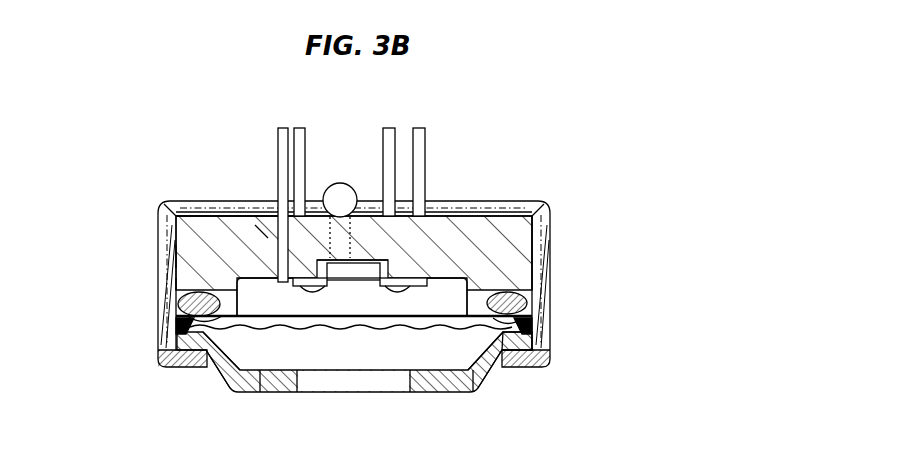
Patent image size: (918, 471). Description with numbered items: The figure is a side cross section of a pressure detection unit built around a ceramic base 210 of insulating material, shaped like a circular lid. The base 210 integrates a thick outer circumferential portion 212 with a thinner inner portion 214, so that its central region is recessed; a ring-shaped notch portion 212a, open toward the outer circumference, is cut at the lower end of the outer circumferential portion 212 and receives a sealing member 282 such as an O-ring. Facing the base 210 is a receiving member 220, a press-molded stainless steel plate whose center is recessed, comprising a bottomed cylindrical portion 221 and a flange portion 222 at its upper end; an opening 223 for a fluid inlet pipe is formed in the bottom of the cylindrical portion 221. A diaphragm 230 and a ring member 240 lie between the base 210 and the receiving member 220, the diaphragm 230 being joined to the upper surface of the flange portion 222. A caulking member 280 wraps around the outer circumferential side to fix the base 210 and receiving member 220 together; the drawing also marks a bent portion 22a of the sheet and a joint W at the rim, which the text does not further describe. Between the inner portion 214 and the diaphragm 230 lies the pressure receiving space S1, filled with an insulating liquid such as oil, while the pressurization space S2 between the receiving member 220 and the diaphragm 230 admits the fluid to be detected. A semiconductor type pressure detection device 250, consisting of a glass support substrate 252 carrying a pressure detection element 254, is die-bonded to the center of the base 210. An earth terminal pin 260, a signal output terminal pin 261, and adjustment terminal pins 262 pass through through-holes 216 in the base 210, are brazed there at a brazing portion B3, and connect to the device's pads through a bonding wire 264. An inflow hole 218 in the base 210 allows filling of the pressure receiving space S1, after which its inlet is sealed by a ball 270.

The base 210 is at (190, 250).
The outer circumferential portion 212 is at (531, 226).
The notch portion 212a is at (176, 284).
The inner portion 214 is at (216, 236).
The through-holes 216 is at (178, 256).
The inflow hole 218 is at (362, 268).
The receiving member 220 is at (351, 385).
The cylindrical portion 221 is at (274, 391).
The flange portion 222 is at (516, 341).
The opening 223 is at (412, 380).
The bent portion 22a is at (481, 383).
The diaphragm 230 is at (228, 385).
The ring member 240 is at (186, 320).
The semiconductor type pressure detection device 250 is at (373, 289).
The support substrate 252 is at (300, 262).
The pressure detection element 254 is at (371, 288).
The earth terminal pin 260 is at (281, 150).
The signal output terminal pin 261 is at (302, 142).
The adjustment terminal pins 262 is at (419, 126).
The bonding wire 264 is at (299, 293).
The ball 270 is at (343, 186).
The caulking member 280 is at (537, 206).
The sealing member 282 is at (520, 303).
The brazing portion B3 is at (268, 237).
The pressure receiving space S1 is at (520, 274).
The pressurization space S2 is at (445, 361).
The weld W is at (526, 326).